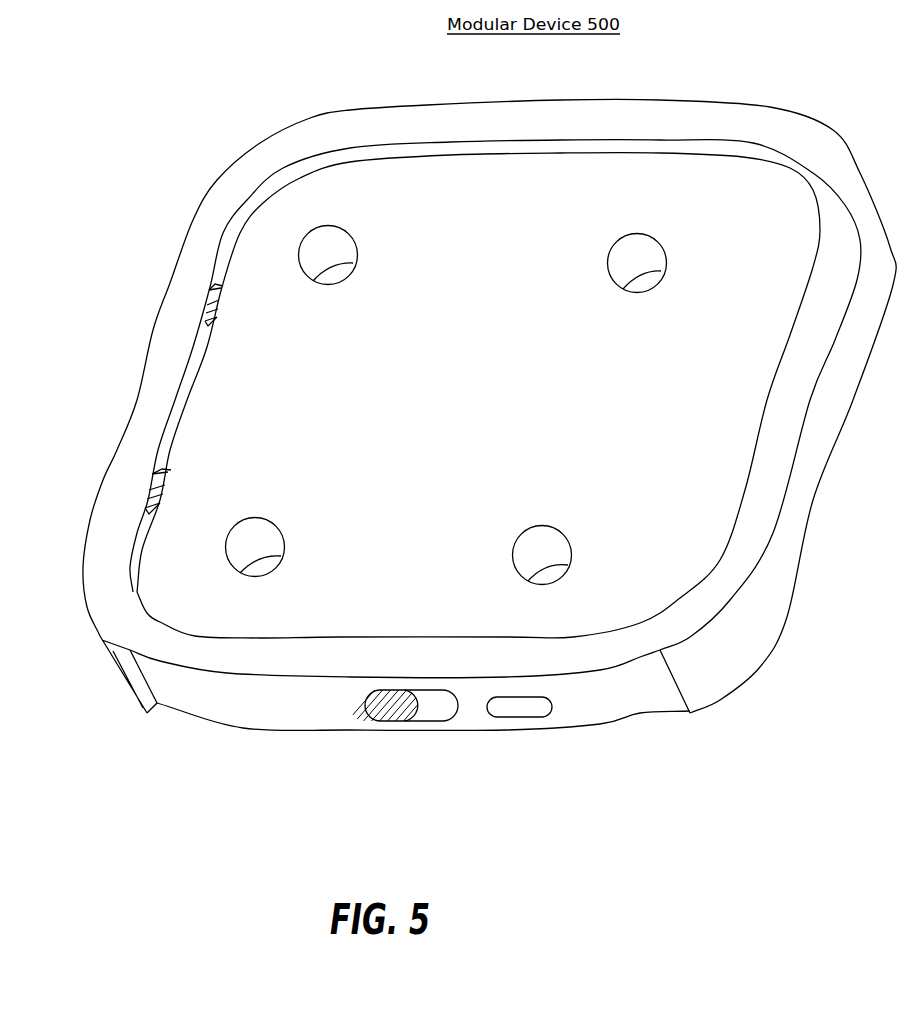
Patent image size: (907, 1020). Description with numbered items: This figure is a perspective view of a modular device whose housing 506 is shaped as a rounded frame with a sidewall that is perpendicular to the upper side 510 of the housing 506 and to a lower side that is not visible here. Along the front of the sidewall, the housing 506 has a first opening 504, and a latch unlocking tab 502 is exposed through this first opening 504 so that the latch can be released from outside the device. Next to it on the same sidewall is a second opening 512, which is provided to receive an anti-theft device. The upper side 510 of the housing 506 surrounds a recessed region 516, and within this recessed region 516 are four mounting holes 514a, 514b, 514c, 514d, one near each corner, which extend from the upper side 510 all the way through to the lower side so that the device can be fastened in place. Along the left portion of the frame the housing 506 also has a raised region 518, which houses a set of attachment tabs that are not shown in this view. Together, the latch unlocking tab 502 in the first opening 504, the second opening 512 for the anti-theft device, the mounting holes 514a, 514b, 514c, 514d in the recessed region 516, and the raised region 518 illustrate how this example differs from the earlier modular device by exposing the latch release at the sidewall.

The latch unlocking tab 502 is at (363, 704).
The first opening 504 is at (423, 689).
The housing 506 is at (213, 133).
The upper side 510 is at (174, 362).
The second opening 512 is at (550, 698).
The mounting hole 514a is at (357, 254).
The mounting hole 514b is at (282, 532).
The mounting hole 514c is at (658, 246).
The mounting hole 514d is at (570, 538).
The recessed region 516 is at (365, 435).
The raised region 518 is at (136, 437).